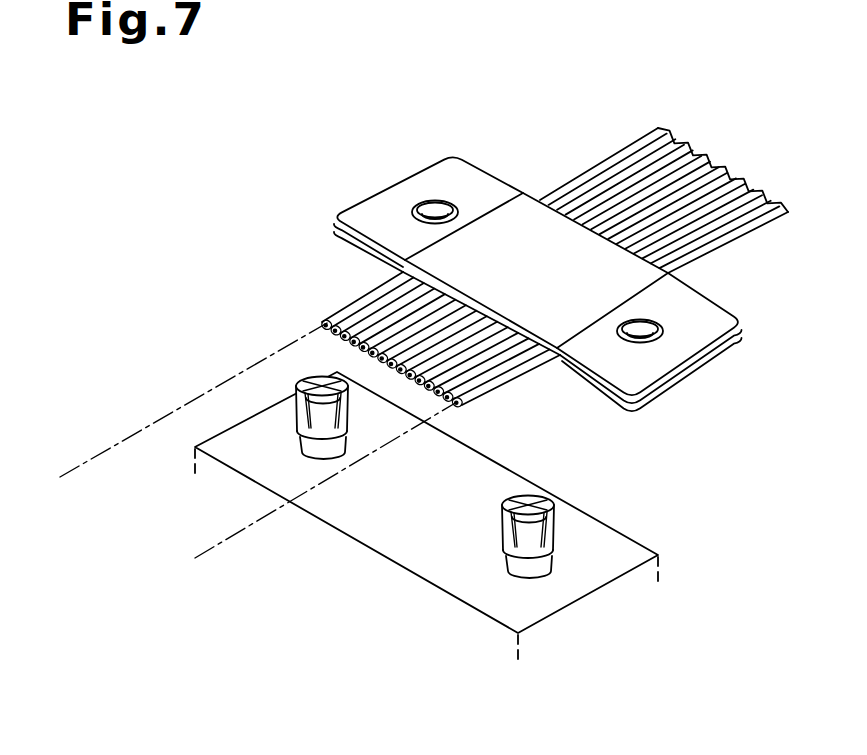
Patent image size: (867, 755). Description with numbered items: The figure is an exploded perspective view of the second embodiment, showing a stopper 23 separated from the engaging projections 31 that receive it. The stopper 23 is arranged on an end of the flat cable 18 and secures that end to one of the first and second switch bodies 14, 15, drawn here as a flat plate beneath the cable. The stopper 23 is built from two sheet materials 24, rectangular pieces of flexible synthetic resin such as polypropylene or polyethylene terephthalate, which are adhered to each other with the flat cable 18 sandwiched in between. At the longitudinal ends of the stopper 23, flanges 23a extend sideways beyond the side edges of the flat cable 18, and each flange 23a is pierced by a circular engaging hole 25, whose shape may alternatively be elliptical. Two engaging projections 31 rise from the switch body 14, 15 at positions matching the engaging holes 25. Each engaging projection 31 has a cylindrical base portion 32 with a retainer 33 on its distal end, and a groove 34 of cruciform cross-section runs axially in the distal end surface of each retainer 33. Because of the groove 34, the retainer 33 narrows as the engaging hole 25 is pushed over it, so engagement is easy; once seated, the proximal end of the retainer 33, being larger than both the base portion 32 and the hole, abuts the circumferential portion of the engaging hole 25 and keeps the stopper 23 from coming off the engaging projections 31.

The first switch body 14 is at (359, 493).
The second switch body 15 is at (443, 575).
The flat cable 18 is at (604, 159).
The stopper 23 is at (571, 262).
The flange 23a is at (553, 262).
The sheet material 24 is at (697, 338).
The engaging hole 25 is at (648, 335).
The engaging projection 31 is at (400, 437).
The base portion 32 is at (552, 558).
The retainer 33 is at (555, 531).
The groove 34 is at (528, 500).